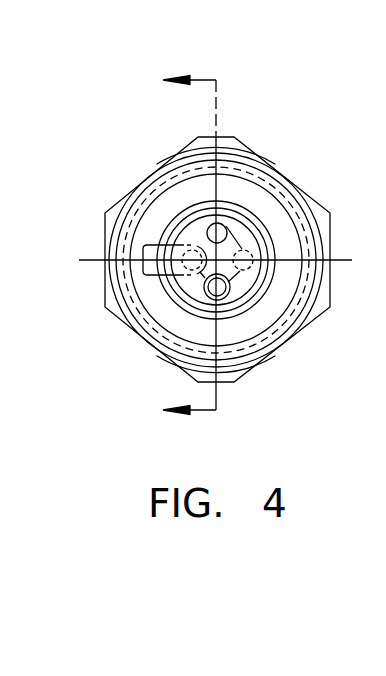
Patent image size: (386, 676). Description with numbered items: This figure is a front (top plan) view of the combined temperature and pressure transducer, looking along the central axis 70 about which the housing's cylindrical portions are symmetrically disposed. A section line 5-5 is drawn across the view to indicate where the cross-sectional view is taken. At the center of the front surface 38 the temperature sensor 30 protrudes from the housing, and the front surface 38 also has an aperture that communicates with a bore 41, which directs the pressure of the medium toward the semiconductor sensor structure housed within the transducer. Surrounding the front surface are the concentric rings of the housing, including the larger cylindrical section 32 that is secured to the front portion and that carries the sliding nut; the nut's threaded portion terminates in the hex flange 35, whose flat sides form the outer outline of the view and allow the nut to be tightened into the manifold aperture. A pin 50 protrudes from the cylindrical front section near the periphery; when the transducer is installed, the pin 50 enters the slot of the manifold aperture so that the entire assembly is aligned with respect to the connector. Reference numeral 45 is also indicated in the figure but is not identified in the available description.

The line 5- 5 is at (209, 246).
The temperature sensor 30 is at (290, 305).
The cylindrical section 32 is at (318, 222).
The hex flange 35 is at (268, 365).
The front surface 38 is at (195, 236).
The bore 41 is at (243, 225).
The insulator insert 45 is at (280, 235).
The pin 50 is at (163, 277).
The central axis 70 is at (385, 233).